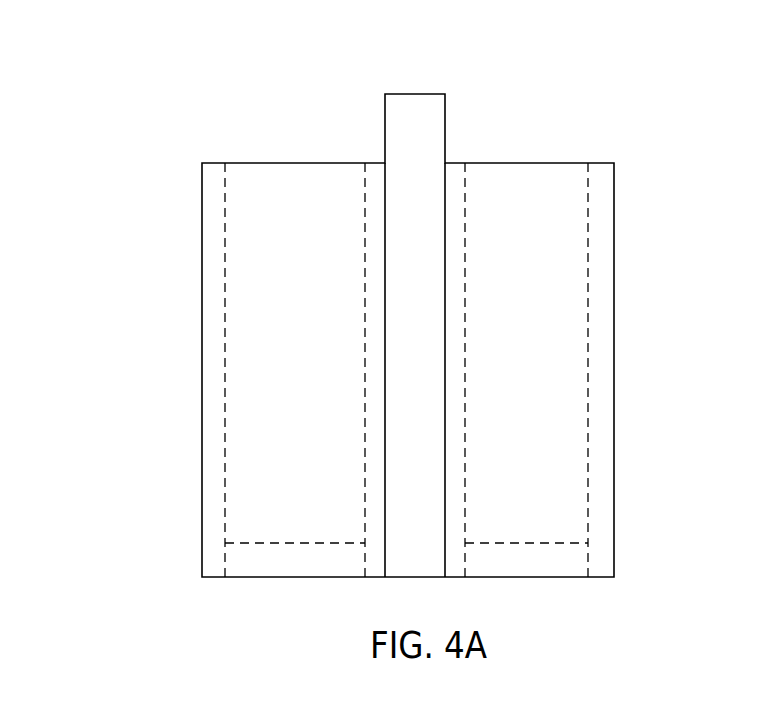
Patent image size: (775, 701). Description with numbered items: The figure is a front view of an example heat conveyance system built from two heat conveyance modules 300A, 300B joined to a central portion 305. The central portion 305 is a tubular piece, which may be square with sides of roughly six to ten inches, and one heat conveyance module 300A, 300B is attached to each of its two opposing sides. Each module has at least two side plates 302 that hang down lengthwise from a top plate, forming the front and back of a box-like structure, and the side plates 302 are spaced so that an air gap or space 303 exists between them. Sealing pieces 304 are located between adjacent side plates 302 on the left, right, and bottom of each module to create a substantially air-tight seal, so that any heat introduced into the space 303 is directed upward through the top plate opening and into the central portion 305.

The heat conveyance module 300A is at (196, 193).
The heat conveyance module 300B is at (622, 186).
The side plate 302 is at (523, 170).
The air gap or space 303 is at (297, 203).
The sealing piece 304 is at (614, 358).
The central portion 305 is at (432, 102).